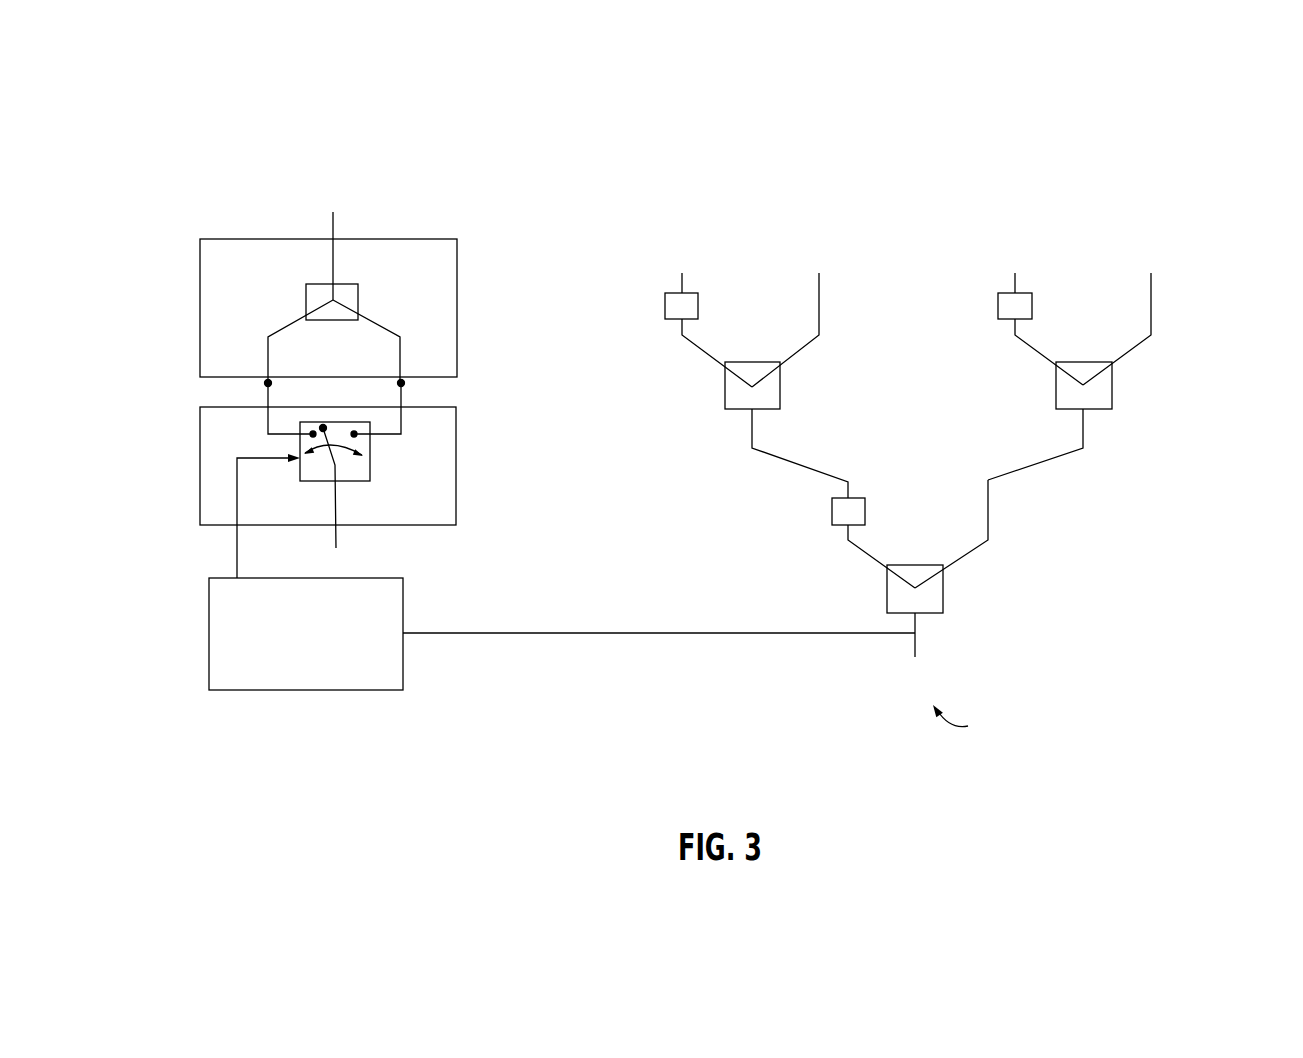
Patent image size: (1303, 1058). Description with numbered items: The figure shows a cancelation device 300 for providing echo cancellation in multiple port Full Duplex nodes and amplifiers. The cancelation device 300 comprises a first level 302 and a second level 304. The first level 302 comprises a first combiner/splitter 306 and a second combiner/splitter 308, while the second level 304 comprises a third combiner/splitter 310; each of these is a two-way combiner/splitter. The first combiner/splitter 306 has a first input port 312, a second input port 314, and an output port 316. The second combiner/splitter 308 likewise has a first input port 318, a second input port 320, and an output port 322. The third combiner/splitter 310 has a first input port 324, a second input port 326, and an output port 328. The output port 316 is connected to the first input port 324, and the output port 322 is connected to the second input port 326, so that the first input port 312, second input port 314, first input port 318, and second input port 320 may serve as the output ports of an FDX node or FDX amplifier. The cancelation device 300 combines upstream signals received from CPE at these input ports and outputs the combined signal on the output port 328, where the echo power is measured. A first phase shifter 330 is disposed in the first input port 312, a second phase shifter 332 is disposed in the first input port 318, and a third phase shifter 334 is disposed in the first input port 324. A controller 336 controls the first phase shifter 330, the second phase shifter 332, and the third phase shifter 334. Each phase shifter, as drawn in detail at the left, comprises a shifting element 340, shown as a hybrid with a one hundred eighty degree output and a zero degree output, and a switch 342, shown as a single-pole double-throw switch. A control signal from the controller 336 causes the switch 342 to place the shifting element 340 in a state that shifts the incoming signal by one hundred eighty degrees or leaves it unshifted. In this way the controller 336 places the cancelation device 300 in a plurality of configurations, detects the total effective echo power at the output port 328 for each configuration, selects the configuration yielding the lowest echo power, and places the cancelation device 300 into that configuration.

The cancelation device 300 is at (996, 119).
The first level 302 is at (811, 410).
The second level 304 is at (666, 566).
The first combiner/splitter 306 is at (748, 362).
The second combiner/splitter 308 is at (1083, 362).
The third combiner/splitter 310 is at (917, 565).
The first input port of first combiner/splitter 312 is at (682, 285).
The second input port of first combiner/splitter 314 is at (819, 305).
The output port of first combiner/splitter 316 is at (752, 430).
The first input port of second combiner/splitter 318 is at (1015, 285).
The second input port of second combiner/splitter 320 is at (1151, 305).
The output port of second combiner/splitter 322 is at (1083, 430).
The first input port of third combiner/splitter 324 is at (848, 487).
The second input port of third combiner/splitter 326 is at (988, 480).
The output port of third combiner/splitter 328 is at (266, 176).
The first phase shifter 330 is at (665, 305).
The second phase shifter 332 is at (998, 305).
The third phase shifter 334 is at (842, 525).
The controller 336 is at (209, 637).
The shifting element 340 is at (200, 307).
The switch 342 is at (200, 467).